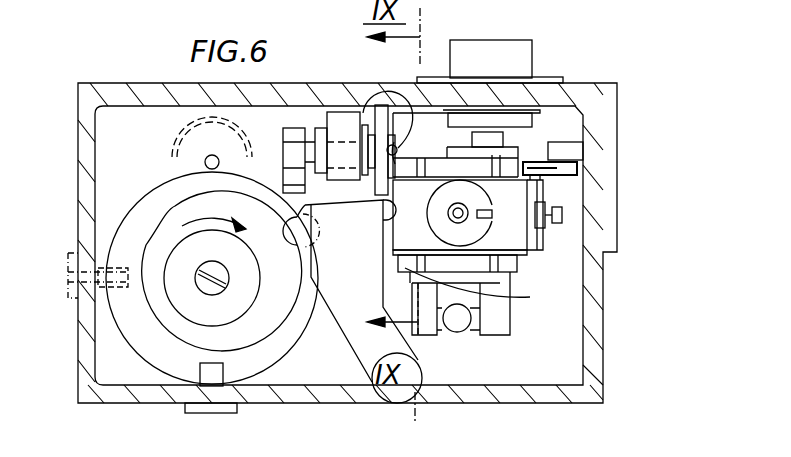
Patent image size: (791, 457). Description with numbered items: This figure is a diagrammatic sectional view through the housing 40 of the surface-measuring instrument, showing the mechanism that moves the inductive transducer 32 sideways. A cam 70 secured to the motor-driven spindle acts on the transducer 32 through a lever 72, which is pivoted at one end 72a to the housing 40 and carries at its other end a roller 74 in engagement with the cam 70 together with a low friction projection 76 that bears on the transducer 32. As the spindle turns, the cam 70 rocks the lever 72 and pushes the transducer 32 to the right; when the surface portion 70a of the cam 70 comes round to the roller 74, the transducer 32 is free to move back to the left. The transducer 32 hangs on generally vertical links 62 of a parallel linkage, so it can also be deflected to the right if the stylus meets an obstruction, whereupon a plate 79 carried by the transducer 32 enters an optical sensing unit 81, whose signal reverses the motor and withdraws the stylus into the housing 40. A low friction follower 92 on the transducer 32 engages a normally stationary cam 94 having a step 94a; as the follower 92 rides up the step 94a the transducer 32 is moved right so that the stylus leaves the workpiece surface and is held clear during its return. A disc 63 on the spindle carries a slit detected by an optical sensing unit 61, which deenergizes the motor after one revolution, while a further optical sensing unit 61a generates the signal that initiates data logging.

The housing 40 is at (595, 368).
The disc 63 is at (123, 315).
The cam 70 is at (160, 312).
The surface portion of cam 70a is at (157, 223).
The roller 74 is at (297, 215).
The optical sensing unit 61 is at (200, 380).
The optical sensing unit 61a is at (82, 277).
The lever 72 is at (353, 290).
The pivoted end of lever 72a is at (405, 400).
The low friction projection 76 is at (385, 215).
The low friction follower 92 is at (400, 100).
The cam 94 is at (363, 113).
The step 94a is at (380, 182).
The links 62 is at (495, 163).
The optical sensing unit 81 is at (573, 153).
The plate 79 is at (587, 167).
The inductive transducer 32 is at (490, 220).